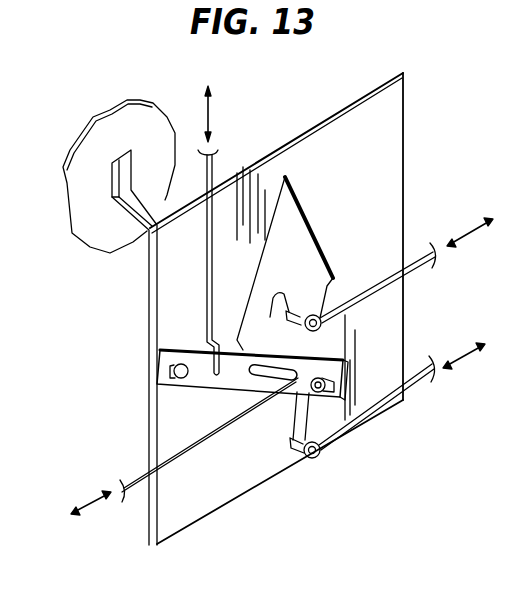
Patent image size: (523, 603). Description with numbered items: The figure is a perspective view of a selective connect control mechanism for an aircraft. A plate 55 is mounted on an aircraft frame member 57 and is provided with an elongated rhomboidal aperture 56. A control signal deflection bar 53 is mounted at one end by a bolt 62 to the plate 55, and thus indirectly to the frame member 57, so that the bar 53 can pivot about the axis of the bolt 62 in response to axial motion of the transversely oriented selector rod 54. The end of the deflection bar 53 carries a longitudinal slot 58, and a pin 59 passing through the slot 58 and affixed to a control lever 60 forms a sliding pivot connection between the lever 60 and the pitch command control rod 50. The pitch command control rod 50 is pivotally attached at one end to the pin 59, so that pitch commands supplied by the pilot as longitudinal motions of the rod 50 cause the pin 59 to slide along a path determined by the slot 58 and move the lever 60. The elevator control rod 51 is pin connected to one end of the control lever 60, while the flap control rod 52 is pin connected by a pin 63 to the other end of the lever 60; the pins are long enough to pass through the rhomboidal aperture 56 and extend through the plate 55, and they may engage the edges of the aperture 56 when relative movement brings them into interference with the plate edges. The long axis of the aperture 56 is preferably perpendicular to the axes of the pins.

The pitch command control rod 50 is at (226, 428).
The elevator control rod 51 is at (388, 280).
The flap control rod 52 is at (386, 400).
The control signal deflection bar 53 is at (193, 392).
The selector rod 54 is at (207, 251).
The plate 55 is at (404, 203).
The rhomboidal aperture 56 is at (308, 228).
The aircraft frame member 57 is at (153, 100).
The longitudinal slot 58 is at (343, 358).
The pin 59 is at (338, 430).
The control lever 60 is at (270, 322).
The bolt 62 is at (170, 371).
The pin 63 is at (322, 455).